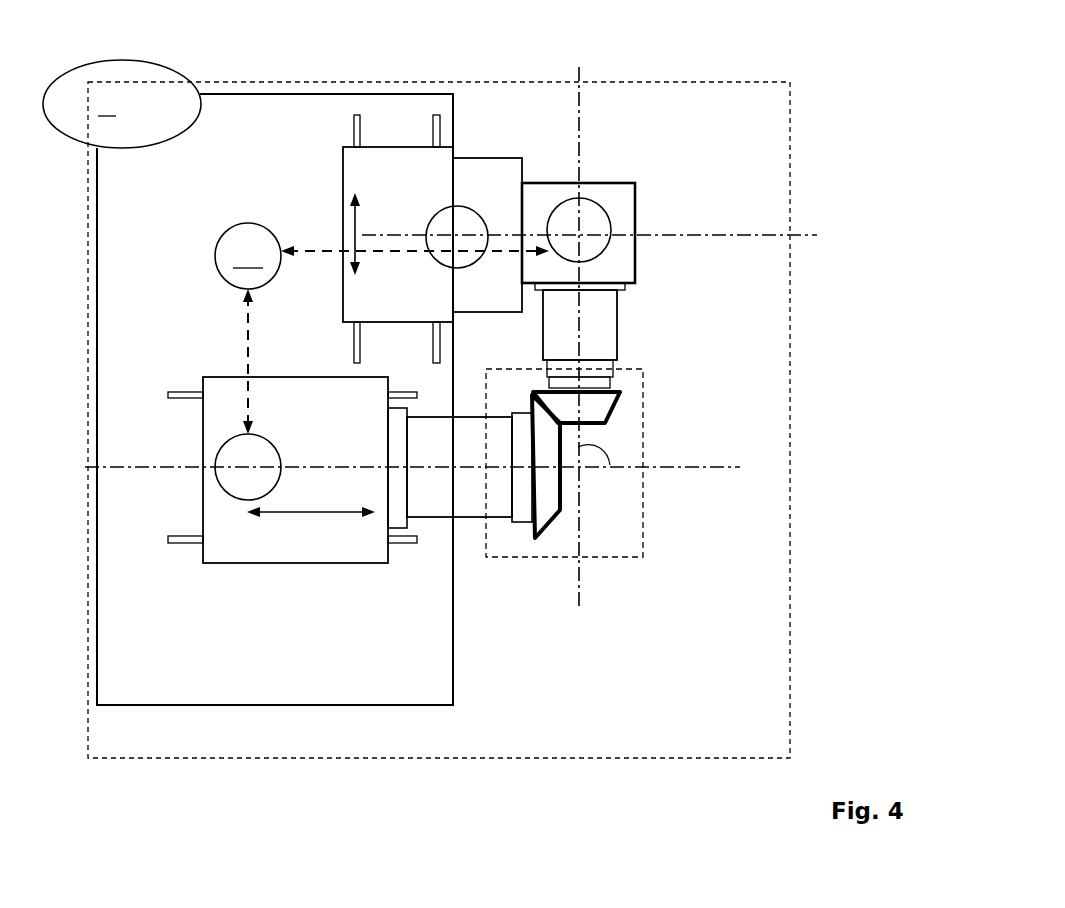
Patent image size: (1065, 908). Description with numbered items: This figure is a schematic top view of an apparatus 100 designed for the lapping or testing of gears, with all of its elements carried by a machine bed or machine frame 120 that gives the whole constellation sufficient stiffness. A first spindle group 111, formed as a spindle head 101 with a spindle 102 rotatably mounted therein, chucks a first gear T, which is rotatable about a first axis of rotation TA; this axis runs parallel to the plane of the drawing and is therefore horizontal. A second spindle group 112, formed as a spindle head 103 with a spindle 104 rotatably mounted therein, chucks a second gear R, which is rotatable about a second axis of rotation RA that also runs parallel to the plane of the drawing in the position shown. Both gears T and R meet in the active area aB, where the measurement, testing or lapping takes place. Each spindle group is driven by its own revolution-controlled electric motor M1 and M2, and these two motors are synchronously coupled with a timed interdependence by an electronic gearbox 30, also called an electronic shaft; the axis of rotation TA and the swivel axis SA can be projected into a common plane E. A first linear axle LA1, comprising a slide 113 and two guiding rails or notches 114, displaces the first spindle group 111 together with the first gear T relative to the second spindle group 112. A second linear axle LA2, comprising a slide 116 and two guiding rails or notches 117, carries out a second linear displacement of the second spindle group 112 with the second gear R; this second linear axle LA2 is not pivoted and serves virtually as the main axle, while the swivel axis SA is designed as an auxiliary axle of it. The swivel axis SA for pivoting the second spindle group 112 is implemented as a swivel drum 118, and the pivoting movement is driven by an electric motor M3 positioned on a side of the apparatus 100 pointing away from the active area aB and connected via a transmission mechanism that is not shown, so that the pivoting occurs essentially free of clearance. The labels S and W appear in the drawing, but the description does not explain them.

The apparatus 100 is at (185, 49).
The electronic gearbox 30 is at (248, 256).
The spindle head 101 is at (412, 541).
The spindle 102 is at (550, 509).
The spindle head 103 is at (625, 280).
The spindle 104 is at (614, 391).
The first spindle group 111 is at (466, 568).
The second spindle group 112 is at (650, 322).
The slide 113 is at (336, 545).
The guiding rails or notches 114 is at (168, 394).
The slide 116 is at (347, 298).
The guiding rails or notches 117 is at (360, 113).
The swivel drum 118 is at (478, 158).
The machine frame 120 is at (443, 673).
The sensor / control unit S is at (122, 104).
The common plane E is at (790, 385).
The active area aB is at (643, 553).
The second gear R is at (613, 414).
The first gear T is at (560, 512).
The angle W is at (594, 458).
The first axis of rotation TA is at (392, 467).
The swivel axis SA is at (609, 237).
The second axis of rotation RA is at (580, 323).
The first linear axle LA1 is at (311, 526).
The second linear axle LA2 is at (378, 234).
The electric motor M1 is at (248, 467).
The electric motor M2 is at (579, 230).
The electric motor M3 is at (457, 237).